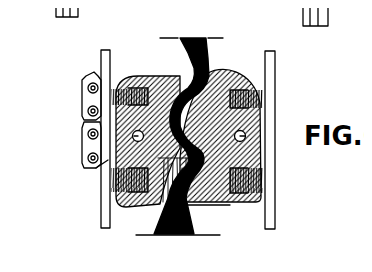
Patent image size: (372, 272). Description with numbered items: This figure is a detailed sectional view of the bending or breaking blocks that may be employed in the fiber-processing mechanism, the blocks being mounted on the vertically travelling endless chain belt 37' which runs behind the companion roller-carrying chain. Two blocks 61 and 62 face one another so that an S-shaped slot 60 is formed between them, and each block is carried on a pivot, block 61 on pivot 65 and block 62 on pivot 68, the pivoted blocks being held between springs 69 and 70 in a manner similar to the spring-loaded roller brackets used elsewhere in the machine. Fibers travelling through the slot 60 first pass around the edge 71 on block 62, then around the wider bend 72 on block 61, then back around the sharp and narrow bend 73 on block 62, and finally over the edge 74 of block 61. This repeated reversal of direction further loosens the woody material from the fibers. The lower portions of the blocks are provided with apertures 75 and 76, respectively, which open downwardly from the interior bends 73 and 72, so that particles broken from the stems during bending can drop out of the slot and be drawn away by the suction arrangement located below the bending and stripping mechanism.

The chain belt 37' is at (73, 96).
The S-shaped slot 60 is at (198, 74).
The block 61 is at (150, 68).
The block 62 is at (220, 194).
The pivot 65 is at (125, 128).
The pivot 68 is at (238, 128).
The spring 69 is at (103, 82).
The spring 70 is at (257, 80).
The edge 71 is at (170, 196).
The wider bend 72 is at (134, 186).
The sharp and narrow bend 73 is at (224, 81).
The edge 74 is at (182, 72).
The aperture 75 is at (99, 160).
The aperture 76 is at (204, 214).